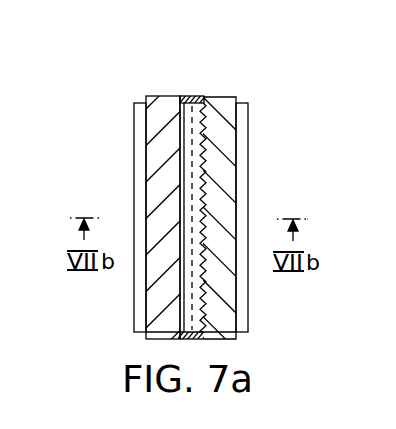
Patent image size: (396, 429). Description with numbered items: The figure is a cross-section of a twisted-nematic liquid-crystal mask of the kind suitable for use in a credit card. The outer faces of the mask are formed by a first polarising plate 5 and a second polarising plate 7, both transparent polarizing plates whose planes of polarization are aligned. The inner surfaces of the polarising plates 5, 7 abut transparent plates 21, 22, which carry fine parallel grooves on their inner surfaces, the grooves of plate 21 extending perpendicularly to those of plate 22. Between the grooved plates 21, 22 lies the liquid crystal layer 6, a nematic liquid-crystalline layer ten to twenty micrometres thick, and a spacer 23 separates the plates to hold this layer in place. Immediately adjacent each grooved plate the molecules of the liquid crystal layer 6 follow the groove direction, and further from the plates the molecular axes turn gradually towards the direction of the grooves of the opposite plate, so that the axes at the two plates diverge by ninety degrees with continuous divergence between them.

The first polarising plate 5 is at (140, 114).
The liquid crystal layer 6 is at (190, 153).
The second polarising plate 7 is at (247, 115).
The transparent plate 21 is at (162, 98).
The transparent plate 22 is at (218, 103).
The spacer 23 is at (188, 97).